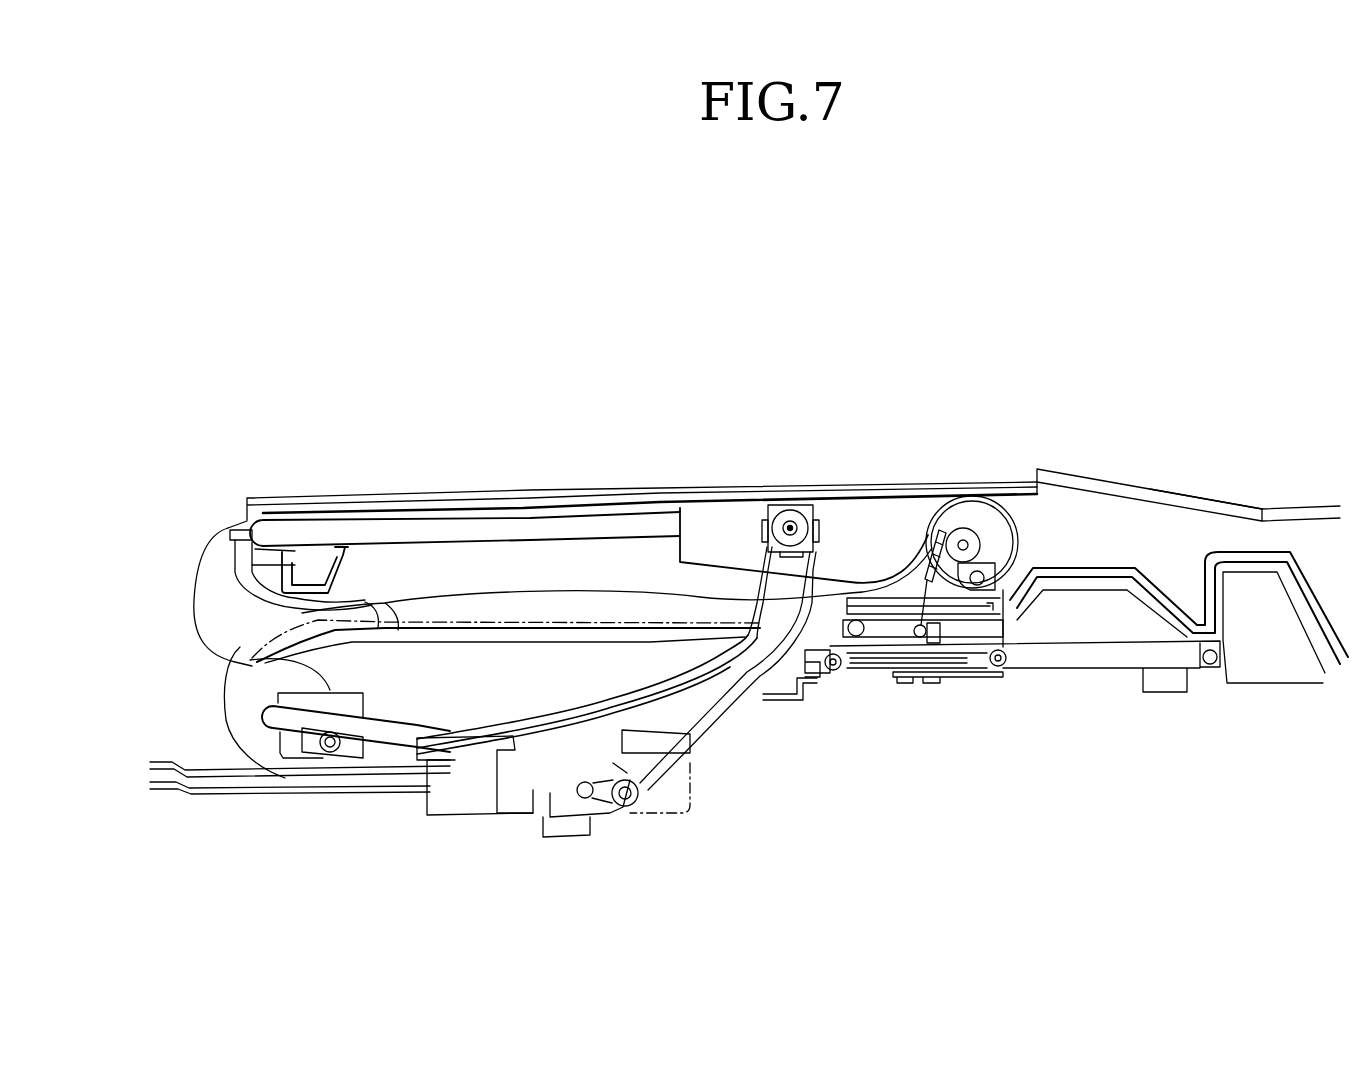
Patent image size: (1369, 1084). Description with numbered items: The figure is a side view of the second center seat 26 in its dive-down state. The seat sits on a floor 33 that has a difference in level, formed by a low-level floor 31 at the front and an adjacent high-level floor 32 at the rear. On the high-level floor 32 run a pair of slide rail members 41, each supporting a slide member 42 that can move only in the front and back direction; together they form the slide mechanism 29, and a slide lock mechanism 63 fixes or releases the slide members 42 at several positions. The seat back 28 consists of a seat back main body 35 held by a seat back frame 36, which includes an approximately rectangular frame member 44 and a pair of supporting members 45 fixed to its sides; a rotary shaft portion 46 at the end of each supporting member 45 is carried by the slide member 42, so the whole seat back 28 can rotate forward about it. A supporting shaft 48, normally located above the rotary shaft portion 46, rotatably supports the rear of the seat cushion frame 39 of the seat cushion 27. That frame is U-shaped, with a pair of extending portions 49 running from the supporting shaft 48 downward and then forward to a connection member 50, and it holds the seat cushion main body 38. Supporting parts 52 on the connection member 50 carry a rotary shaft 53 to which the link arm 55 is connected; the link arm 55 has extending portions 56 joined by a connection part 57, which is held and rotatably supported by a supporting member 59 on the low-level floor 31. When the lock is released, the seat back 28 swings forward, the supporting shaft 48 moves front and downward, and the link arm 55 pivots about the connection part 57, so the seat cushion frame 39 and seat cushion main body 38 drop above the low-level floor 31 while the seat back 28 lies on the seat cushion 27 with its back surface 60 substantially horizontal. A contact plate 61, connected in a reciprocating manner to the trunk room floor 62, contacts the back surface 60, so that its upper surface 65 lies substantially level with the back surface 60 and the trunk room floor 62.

The second center seat 26 is at (496, 314).
The seat cushion 27 is at (216, 716).
The seat back 28 is at (176, 600).
The slide mechanism 29 is at (949, 704).
The low-level floor 31 is at (431, 697).
The high-level floor 32 is at (1070, 617).
The floor 33 is at (660, 571).
The seat back main body 35 is at (495, 575).
The seat back frame 36 is at (297, 530).
The seat cushion main body 38 is at (392, 703).
The seat cushion frame 39 is at (540, 785).
The slide rail members 41 is at (1037, 667).
The slide member 42 is at (972, 512).
The frame member 44 is at (440, 508).
The supporting members 45 is at (708, 515).
The rotary shaft portion 46 is at (940, 530).
The supporting shaft 48 is at (796, 508).
The extending portions 49 is at (686, 695).
The connection member 50 is at (246, 778).
The supporting parts 52 is at (315, 690).
The rotary shaft 53 is at (327, 760).
The link arm 55 is at (459, 805).
The extending portions 56 is at (525, 737).
The connection part 57 is at (635, 805).
The supporting member 59 is at (646, 715).
The back surface 60 is at (848, 498).
The contact plate 61 is at (1134, 470).
The trunk room floor 62 is at (1295, 507).
The slide lock mechanism 63 is at (902, 712).
The upper surface 65 is at (1225, 505).